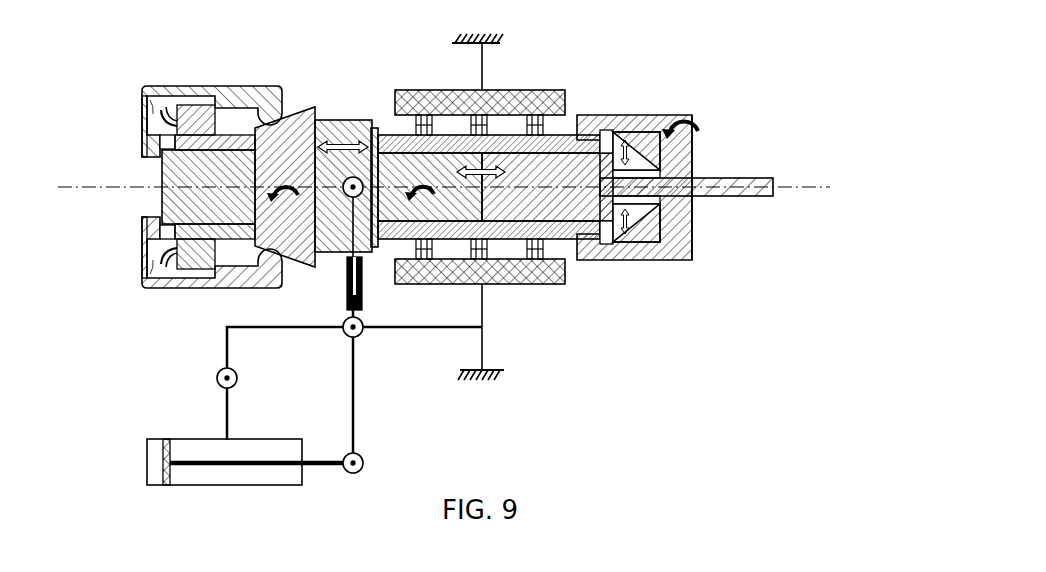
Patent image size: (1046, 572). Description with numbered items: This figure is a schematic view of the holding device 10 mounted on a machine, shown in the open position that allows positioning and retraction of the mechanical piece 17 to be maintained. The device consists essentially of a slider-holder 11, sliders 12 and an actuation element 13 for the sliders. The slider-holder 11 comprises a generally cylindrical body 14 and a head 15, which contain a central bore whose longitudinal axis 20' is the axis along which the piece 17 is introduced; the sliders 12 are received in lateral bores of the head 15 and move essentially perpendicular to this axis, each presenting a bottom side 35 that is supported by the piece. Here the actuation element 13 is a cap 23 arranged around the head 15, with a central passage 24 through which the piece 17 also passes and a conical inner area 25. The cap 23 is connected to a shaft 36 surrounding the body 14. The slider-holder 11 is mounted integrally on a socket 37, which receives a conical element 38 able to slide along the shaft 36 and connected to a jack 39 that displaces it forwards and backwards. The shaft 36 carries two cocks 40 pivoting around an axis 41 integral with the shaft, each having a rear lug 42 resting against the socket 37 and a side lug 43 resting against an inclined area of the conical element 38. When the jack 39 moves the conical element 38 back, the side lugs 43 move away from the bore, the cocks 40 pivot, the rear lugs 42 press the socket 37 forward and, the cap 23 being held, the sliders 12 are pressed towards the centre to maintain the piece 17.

The holding device 10 is at (572, 92).
The slider-holder 11 is at (569, 214).
The sliders 12 is at (643, 150).
The actuation element 13 is at (698, 234).
The body 14 is at (584, 153).
The head 15 is at (660, 158).
The mechanical piece 17 is at (755, 180).
The longitudinal axis 20' is at (459, 157).
The cap 23 is at (641, 132).
The central passage 24 is at (692, 178).
The conical inner area 25 is at (656, 222).
The bottom side 35 is at (651, 240).
The shaft 36 is at (524, 236).
The socket 37 is at (374, 128).
The conical element 38 is at (289, 128).
The jack 39 is at (150, 442).
The cocks 40 is at (184, 80).
The axis 41 is at (160, 108).
The rear lug 42 is at (147, 140).
The side lug 43 is at (268, 104).